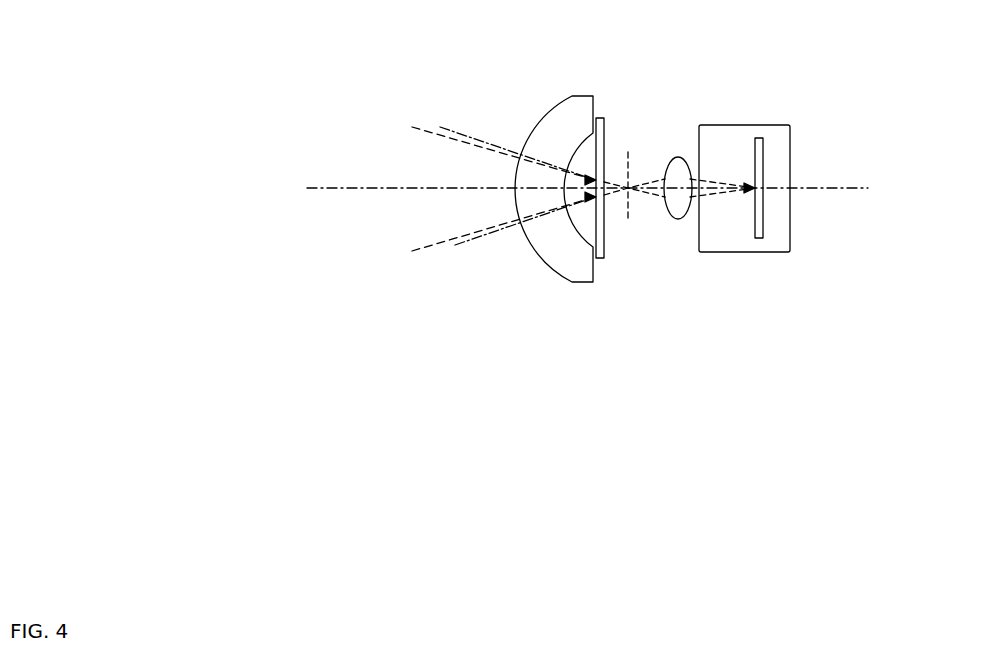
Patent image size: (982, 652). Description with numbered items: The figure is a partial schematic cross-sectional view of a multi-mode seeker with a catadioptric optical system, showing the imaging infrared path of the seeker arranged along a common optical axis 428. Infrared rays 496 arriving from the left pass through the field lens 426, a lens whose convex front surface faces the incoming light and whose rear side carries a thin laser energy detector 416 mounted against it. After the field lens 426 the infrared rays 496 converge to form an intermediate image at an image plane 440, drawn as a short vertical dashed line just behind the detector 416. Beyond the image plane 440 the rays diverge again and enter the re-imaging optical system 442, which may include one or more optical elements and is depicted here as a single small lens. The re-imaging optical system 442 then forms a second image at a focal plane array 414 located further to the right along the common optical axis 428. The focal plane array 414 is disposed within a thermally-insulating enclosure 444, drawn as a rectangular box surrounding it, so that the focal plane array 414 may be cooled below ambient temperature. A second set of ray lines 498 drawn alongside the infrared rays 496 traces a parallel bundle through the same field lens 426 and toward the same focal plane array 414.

The focal plane array 414 is at (763, 167).
The laser energy detector 416 is at (605, 251).
The field lens 426 is at (572, 96).
The common optical axis 428 is at (362, 188).
The image plane 440 is at (630, 218).
The re-imaging optical system 442 is at (677, 158).
The thermally-insulating enclosure 444 is at (745, 125).
The infrared rays 496 is at (412, 127).
The light ray 498 is at (440, 127).